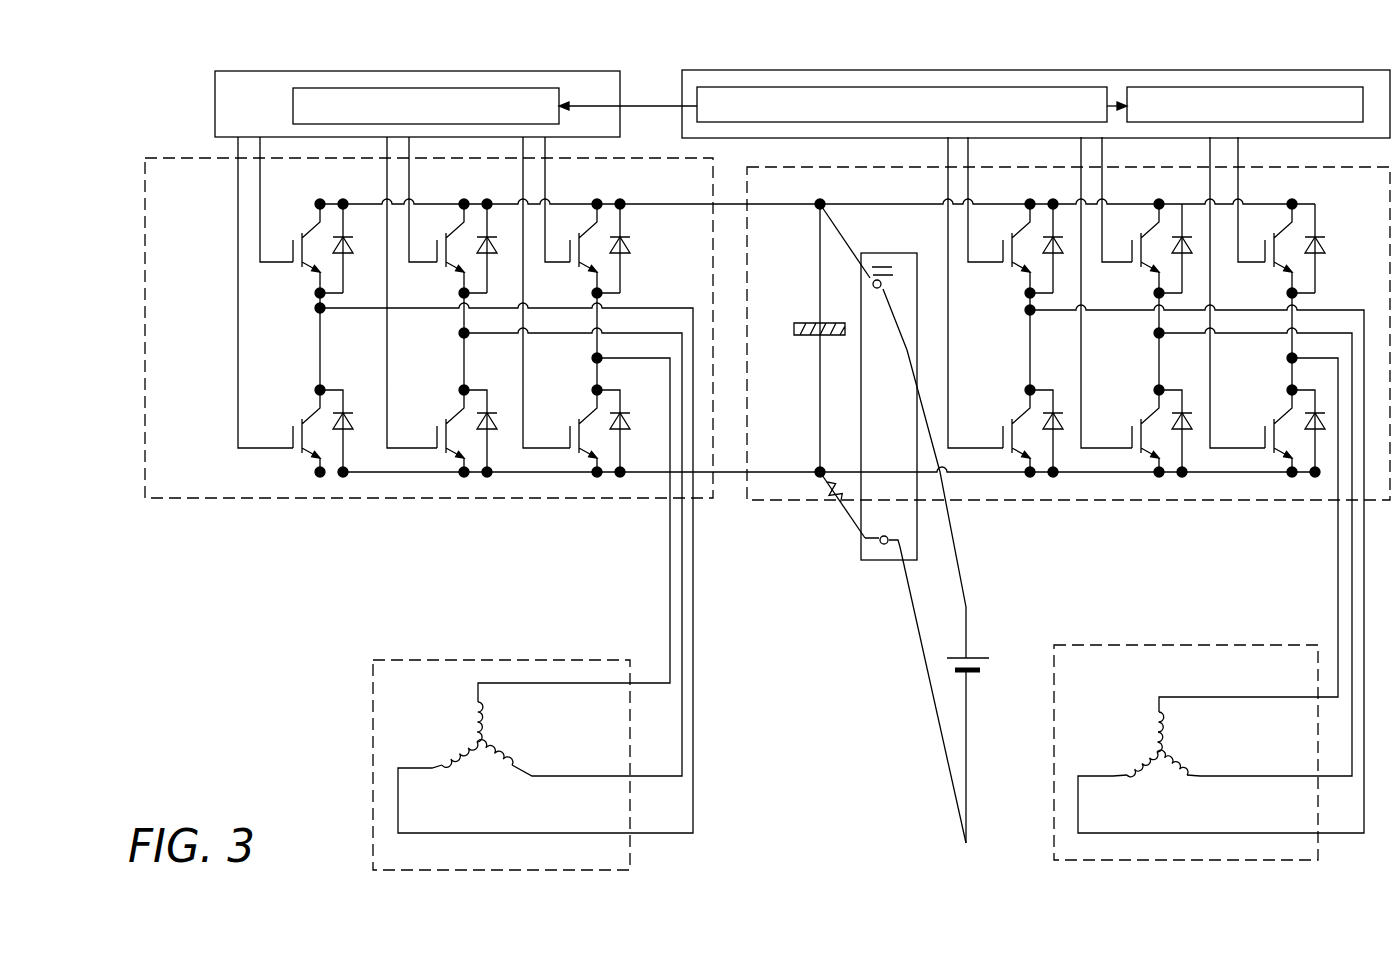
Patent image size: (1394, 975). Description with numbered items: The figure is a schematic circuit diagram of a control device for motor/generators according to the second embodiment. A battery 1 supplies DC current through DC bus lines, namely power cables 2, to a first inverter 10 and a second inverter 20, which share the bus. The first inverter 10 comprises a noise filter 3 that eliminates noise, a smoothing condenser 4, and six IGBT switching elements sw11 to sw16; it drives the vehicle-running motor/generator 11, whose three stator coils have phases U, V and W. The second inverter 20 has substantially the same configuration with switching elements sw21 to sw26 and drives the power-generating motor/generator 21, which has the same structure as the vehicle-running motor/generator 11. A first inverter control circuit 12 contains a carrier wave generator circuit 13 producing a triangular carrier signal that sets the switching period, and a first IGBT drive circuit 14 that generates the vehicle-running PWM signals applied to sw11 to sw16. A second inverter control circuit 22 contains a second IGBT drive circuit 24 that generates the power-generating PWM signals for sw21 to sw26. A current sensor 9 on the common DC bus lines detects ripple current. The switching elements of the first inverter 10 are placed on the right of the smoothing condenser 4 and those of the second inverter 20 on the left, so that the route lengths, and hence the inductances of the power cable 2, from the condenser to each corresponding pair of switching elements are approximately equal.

The battery 1 is at (975, 658).
The power cable 2 is at (725, 207).
The noise filter 3 is at (882, 562).
The smoothing condenser 4 is at (810, 323).
The current sensor 9 is at (827, 500).
The first inverter 10 is at (1058, 502).
The vehicle-running motor/generator 11 is at (1122, 645).
The first inverter control circuit 12 is at (1338, 70).
The carrier wave generator circuit 13 is at (1035, 87).
The first IGBT drive circuit 14 is at (1172, 87).
The second inverter 20 is at (295, 500).
The power-generating motor/generator 21 is at (447, 660).
The second inverter control circuit 22 is at (572, 71).
The second IGBT drive circuit 24 is at (428, 88).